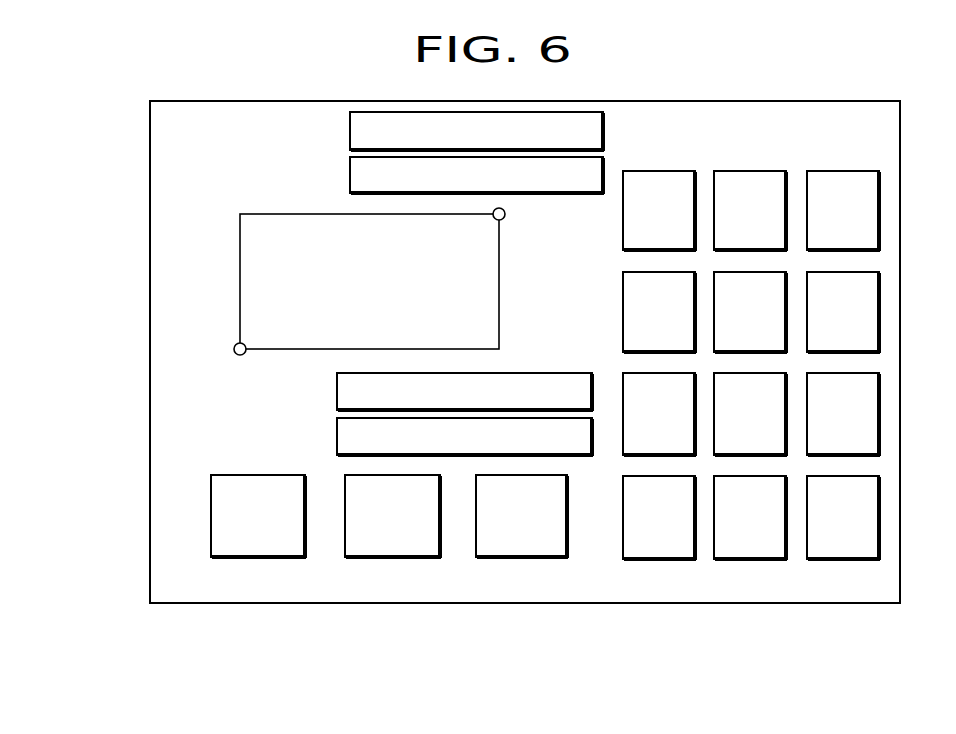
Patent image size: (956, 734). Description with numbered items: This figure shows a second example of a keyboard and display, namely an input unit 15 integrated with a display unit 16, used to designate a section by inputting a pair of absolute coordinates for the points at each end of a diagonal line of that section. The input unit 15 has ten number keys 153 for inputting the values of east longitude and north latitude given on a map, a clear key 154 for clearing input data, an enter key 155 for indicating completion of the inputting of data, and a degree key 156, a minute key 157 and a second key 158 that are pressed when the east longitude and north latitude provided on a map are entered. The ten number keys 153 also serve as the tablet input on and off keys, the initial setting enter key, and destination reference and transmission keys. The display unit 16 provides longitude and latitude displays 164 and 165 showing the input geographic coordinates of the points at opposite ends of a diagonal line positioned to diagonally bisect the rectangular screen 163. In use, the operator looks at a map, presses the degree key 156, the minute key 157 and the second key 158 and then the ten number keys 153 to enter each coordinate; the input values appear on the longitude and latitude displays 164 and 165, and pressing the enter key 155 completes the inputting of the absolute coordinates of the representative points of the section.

The input unit 15 is at (877, 658).
The display unit 16 is at (84, 169).
The ten number keys 153 is at (650, 582).
The clear key 154 is at (740, 560).
The enter key 155 is at (837, 560).
The degree key 156 is at (245, 558).
The minute key 157 is at (383, 558).
The second key 158 is at (505, 558).
The rectangular screen 163 is at (240, 275).
The longitude and latitude display 164 is at (155, 144).
The longitude and latitude display 165 is at (155, 415).